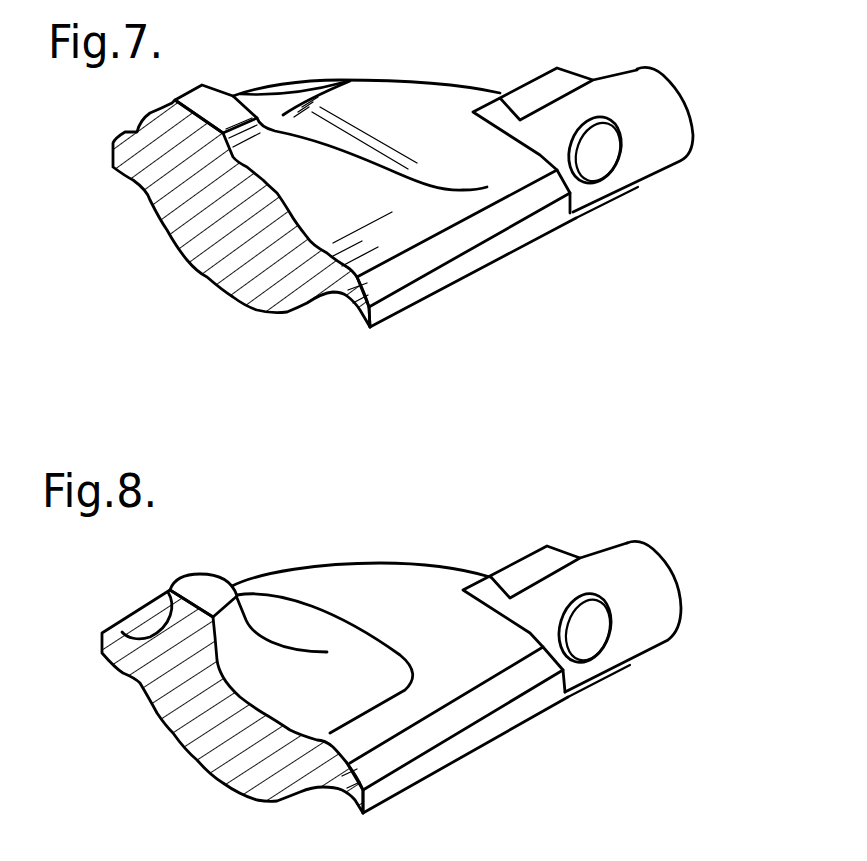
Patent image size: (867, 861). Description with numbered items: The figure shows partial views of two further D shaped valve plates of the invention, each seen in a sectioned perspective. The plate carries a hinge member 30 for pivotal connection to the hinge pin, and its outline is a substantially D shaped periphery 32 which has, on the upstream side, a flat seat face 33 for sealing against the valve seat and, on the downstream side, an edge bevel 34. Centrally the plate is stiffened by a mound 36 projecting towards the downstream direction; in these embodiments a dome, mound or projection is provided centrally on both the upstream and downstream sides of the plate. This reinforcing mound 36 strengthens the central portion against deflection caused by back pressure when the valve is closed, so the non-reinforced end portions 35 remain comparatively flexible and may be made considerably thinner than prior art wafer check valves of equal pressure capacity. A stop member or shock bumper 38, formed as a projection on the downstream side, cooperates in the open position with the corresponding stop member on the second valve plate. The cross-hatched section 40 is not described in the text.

In FIG. 7, the hinge member 30 is at (677, 125).
In FIG. 8, the hinge member 30 is at (652, 597).
In FIG. 7, the D shaped periphery 32 is at (357, 293).
In FIG. 8, the D shaped periphery 32 is at (350, 787).
In FIG. 7, the flat seat face 33 is at (352, 323).
In FIG. 8, the flat seat face 33 is at (352, 812).
In FIG. 7, the edge bevel 34 is at (470, 238).
In FIG. 8, the edge bevel 34 is at (472, 715).
In FIG. 7, the non-reinforced end portions 35 is at (458, 130).
In FIG. 8, the non-reinforced end portions 35 is at (448, 615).
In FIG. 7, the mound 36 is at (320, 101).
In FIG. 8, the mound 36 is at (273, 600).
In FIG. 7, the stop member or shock bumper 38 is at (208, 97).
In FIG. 8, the stop member or shock bumper 38 is at (197, 583).
In FIG. 7, the sectioned body 40 is at (207, 272).
In FIG. 8, the sectioned body 40 is at (212, 758).